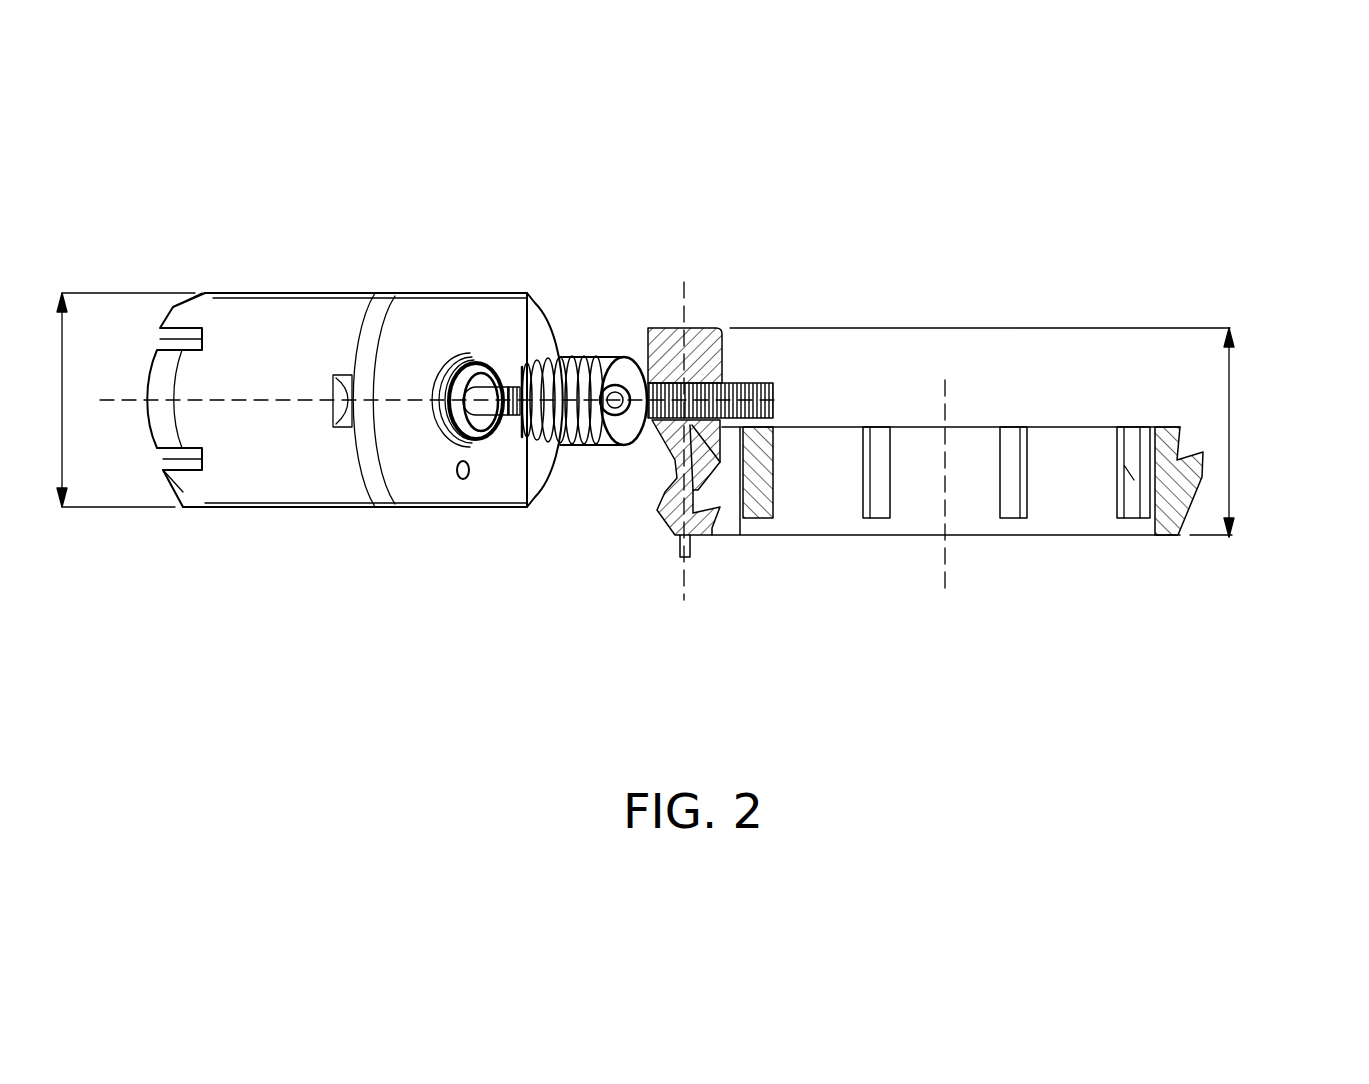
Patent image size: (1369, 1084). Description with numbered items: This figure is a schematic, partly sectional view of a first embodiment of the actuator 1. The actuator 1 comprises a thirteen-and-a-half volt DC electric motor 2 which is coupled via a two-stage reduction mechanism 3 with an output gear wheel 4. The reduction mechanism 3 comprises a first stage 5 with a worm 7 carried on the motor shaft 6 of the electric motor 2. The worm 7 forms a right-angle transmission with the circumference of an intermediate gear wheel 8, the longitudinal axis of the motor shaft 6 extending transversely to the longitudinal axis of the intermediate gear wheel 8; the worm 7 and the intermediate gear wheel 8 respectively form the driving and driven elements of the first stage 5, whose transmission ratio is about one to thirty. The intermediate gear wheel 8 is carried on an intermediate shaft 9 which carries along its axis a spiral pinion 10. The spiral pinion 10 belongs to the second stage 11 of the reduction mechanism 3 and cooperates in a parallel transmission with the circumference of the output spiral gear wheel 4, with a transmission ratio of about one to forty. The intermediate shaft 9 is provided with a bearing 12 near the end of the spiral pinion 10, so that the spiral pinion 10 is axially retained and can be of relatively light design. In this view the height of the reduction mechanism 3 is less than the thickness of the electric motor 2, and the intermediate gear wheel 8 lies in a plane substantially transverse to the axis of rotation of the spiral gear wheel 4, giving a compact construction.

The actuator 1 is at (701, 458).
The electric motor 2 is at (355, 408).
The reduction mechanism 3 is at (990, 528).
The output gear wheel 4 is at (1068, 440).
The first stage 5 is at (548, 260).
The motor shaft 6 is at (490, 405).
The worm 7 is at (606, 347).
The intermediate gear wheel 8 is at (763, 400).
The intermediate shaft 9 is at (704, 330).
The spiral pinion 10 is at (660, 498).
The second stage 11 is at (908, 682).
The bearing 12 is at (678, 546).